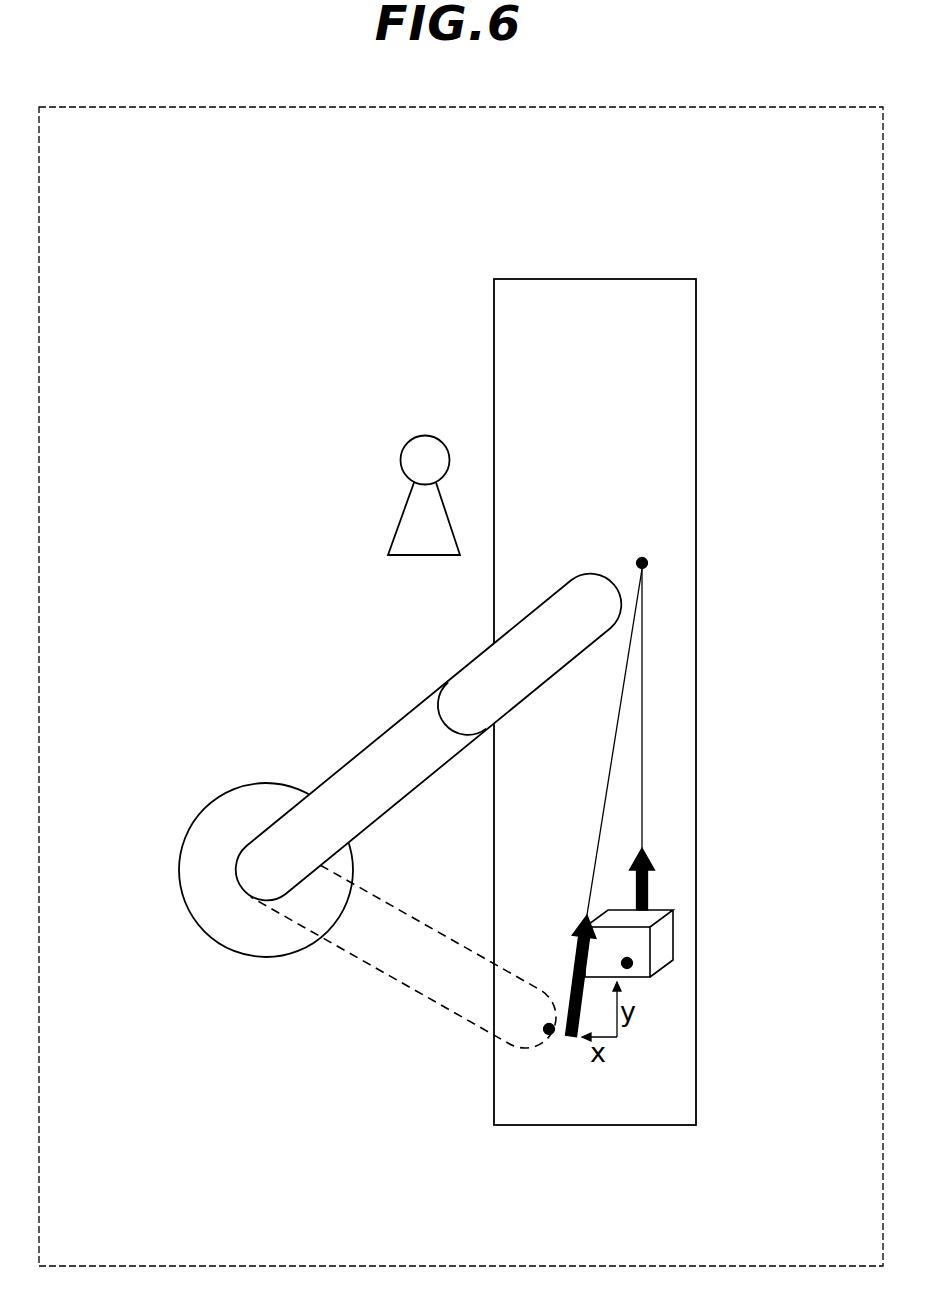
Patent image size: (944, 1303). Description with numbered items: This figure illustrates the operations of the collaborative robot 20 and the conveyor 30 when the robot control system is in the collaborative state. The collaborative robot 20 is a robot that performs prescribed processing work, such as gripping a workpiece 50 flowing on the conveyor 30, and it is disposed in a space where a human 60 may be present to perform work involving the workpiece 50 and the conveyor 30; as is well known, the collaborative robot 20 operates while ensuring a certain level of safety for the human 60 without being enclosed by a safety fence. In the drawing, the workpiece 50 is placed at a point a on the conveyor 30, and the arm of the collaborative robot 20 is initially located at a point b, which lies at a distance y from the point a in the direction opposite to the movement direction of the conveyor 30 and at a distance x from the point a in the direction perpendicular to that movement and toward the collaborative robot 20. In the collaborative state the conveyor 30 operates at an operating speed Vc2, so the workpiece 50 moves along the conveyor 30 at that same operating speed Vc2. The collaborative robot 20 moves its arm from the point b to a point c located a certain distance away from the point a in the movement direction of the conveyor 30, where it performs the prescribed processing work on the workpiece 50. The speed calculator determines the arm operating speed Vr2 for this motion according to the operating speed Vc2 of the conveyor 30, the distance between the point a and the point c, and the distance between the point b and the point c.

The collaborative robot 20 is at (332, 776).
The conveyor 30 is at (617, 279).
The workpiece 50 is at (676, 930).
The human 60 is at (424, 436).
The point a is at (632, 966).
The point b is at (549, 1036).
The point c is at (648, 566).
The operating speed vr2 Vr2 is at (560, 976).
The operating speed vc2 Vc2 is at (664, 879).